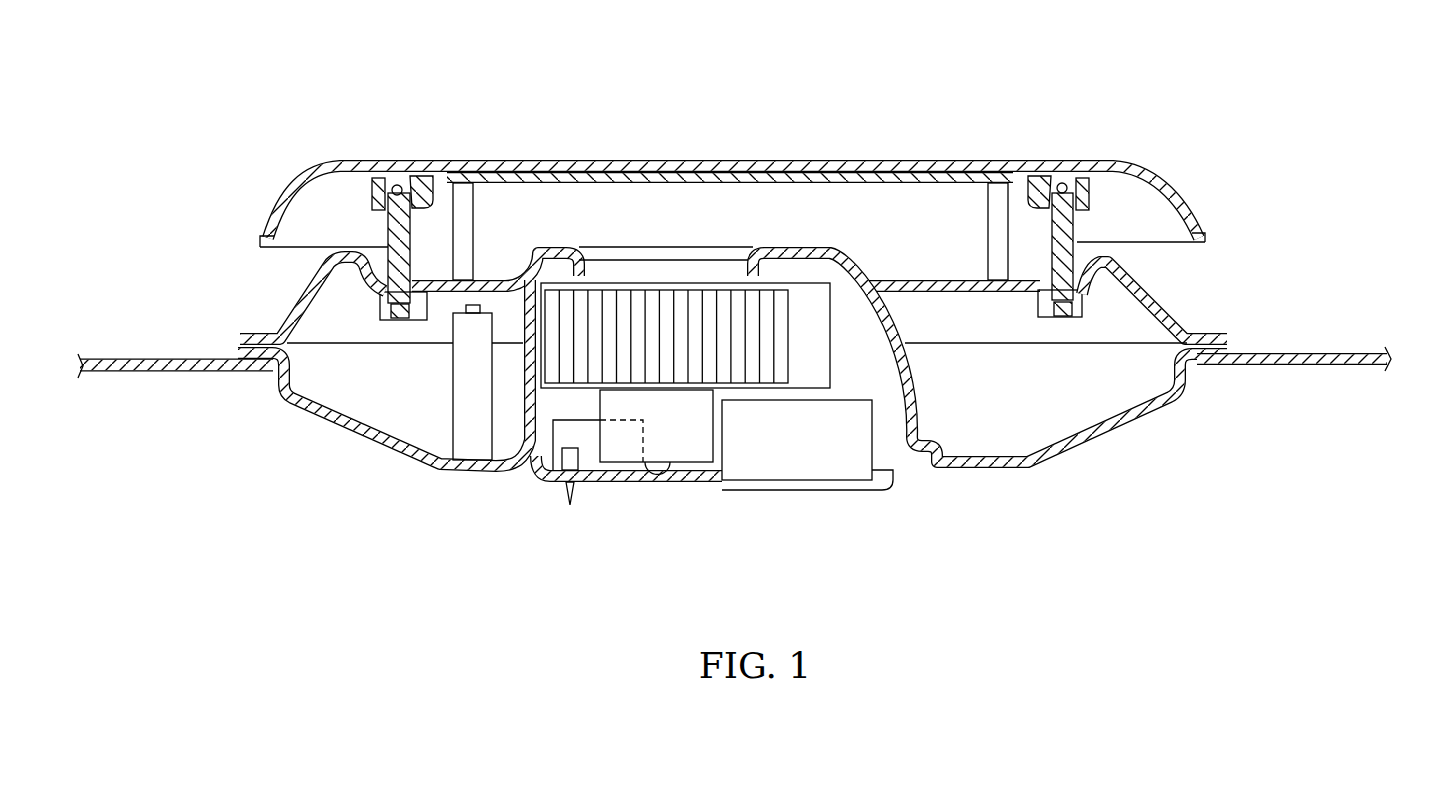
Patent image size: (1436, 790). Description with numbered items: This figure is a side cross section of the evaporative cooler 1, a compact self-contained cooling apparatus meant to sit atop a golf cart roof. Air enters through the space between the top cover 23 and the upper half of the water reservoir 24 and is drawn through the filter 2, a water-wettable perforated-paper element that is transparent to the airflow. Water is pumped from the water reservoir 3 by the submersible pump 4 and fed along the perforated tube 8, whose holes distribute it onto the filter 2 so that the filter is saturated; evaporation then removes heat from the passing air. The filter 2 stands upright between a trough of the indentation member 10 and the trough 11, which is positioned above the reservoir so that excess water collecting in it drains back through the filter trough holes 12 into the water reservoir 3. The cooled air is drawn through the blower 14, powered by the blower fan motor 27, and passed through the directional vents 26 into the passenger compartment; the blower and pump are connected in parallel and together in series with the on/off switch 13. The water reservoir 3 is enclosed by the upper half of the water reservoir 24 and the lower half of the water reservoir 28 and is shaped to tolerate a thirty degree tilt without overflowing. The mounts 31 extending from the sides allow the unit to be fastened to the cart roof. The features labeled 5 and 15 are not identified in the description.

The evaporative cooler 1 is at (703, 128).
The filter 2 is at (387, 233).
The water reservoir 3 is at (729, 389).
The submersible pump 4 is at (470, 437).
The base plate 5 is at (995, 208).
The perforated tube 8 is at (395, 185).
The indentation member 10 is at (612, 183).
The trough 11 is at (695, 344).
The filter trough holes 12 is at (398, 320).
The on/off switch 13 is at (578, 470).
The blower 14 is at (573, 370).
The terminal bracket 15 is at (558, 433).
The top cover 23 is at (833, 158).
The upper half of the water reservoir 24 is at (296, 313).
The directional vents 26 is at (810, 465).
The blower fan motor 27 is at (678, 452).
The lower half of the water reservoir 28 is at (360, 437).
The mounts 31 is at (147, 358).